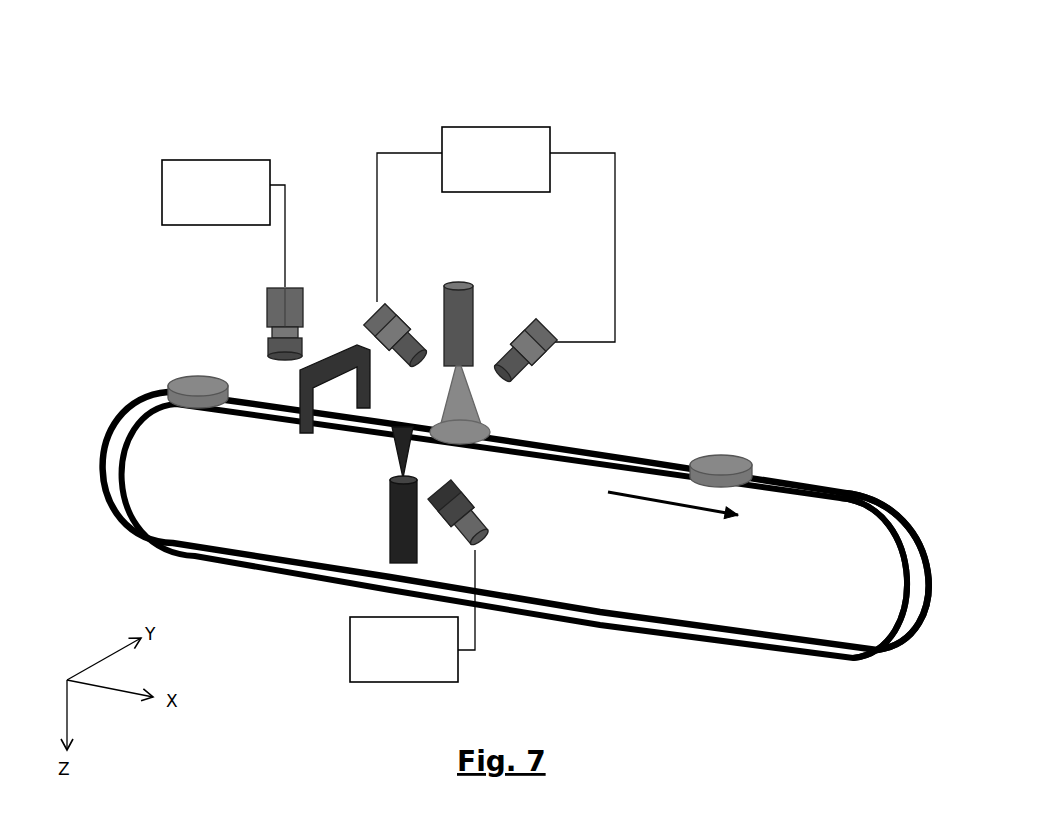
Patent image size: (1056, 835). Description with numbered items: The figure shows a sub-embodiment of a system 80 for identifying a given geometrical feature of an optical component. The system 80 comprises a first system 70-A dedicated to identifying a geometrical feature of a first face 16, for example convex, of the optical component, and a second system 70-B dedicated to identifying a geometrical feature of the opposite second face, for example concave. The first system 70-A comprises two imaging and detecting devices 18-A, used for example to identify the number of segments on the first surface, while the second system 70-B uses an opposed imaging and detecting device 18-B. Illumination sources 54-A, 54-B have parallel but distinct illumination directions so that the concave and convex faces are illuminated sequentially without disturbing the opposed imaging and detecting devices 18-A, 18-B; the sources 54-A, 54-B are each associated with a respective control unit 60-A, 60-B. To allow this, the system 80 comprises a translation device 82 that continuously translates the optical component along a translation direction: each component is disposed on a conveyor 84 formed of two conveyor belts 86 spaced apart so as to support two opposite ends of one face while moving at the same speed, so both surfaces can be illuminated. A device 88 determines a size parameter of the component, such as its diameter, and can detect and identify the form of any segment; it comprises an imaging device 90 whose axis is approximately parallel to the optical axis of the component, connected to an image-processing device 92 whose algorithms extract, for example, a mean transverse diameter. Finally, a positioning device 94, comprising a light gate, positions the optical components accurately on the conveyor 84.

The first face 16 is at (731, 456).
The imaging and detecting device 18-A is at (388, 312).
The imaging and detecting device 18-B is at (477, 547).
The illumination source 54-A is at (472, 296).
The illumination source 54-B is at (390, 530).
The first controller 60-A is at (496, 159).
The second controller 60-B is at (404, 649).
The first system 70-A is at (661, 177).
The second system 70-B is at (320, 617).
The system 80 is at (856, 333).
The translation device 82 is at (898, 495).
The conveyor 84 is at (860, 655).
The conveyor belts 86 is at (905, 583).
The device 88 is at (252, 138).
The imaging device 90 is at (268, 303).
The image-processing device 92 is at (216, 192).
The positioning device 94 is at (338, 363).